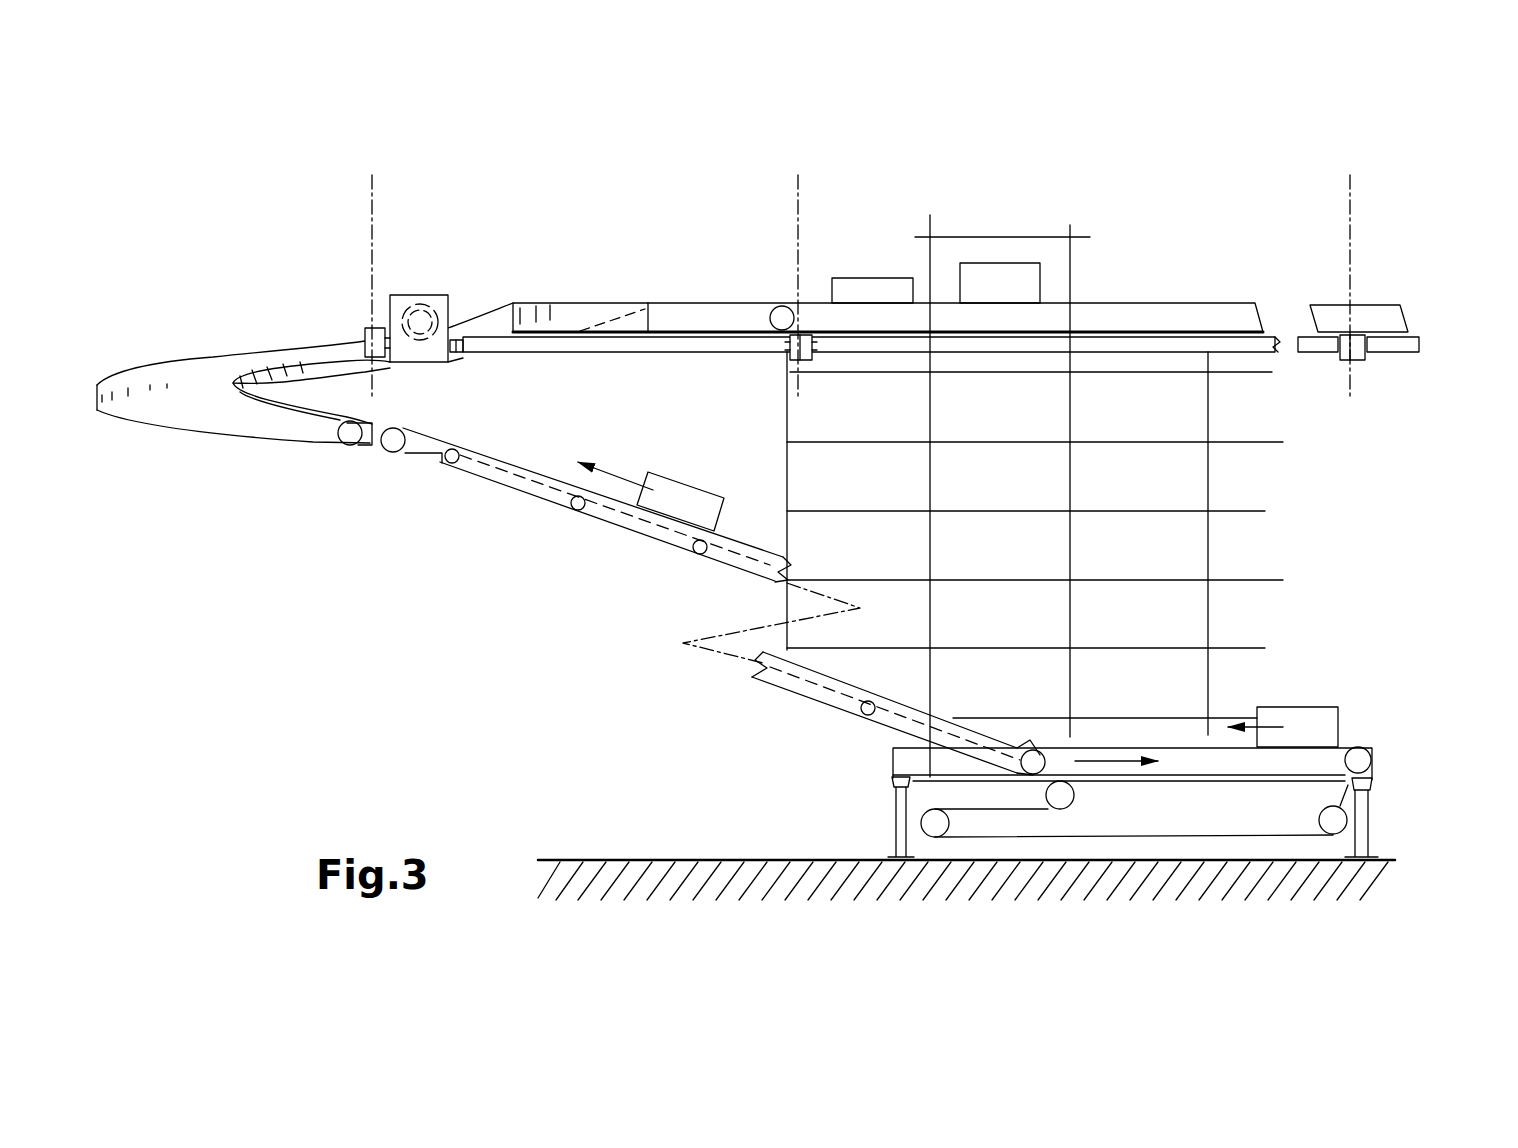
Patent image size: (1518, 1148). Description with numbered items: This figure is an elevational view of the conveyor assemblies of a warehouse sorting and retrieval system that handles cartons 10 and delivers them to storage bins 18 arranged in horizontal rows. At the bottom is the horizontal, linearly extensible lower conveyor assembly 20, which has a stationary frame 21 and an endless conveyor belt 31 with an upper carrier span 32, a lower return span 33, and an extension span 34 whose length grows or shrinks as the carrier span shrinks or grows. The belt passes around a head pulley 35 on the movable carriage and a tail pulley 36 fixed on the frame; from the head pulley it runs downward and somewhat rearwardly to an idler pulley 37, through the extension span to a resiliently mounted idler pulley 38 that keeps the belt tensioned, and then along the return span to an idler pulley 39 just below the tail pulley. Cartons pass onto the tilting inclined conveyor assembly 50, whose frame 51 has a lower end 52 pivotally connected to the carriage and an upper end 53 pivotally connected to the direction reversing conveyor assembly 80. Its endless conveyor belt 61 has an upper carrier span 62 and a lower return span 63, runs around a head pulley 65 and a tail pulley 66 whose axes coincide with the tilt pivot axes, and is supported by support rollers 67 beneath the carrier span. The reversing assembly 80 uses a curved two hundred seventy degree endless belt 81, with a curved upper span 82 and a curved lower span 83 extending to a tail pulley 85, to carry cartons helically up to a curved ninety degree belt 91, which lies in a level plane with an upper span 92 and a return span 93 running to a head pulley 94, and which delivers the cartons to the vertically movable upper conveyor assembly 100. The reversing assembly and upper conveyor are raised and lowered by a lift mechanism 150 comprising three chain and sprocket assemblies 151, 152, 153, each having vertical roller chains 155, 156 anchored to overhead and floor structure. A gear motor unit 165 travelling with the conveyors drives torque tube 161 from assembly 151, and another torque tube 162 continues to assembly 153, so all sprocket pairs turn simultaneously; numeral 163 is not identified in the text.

The cartons 10 is at (985, 297).
The storage bins 18 is at (982, 422).
The lower conveyor assembly 20 is at (1150, 722).
The stationary frame 21 is at (893, 832).
The endless conveyor belt 31 is at (1366, 820).
The carrier span 32 is at (1305, 750).
The return span 33 is at (1165, 836).
The extension span 34 is at (1010, 810).
The head pulley 35 is at (1088, 750).
The tail pulley 36 is at (1365, 748).
The idler pulley 37 is at (1045, 790).
The idler pulley 38 is at (935, 825).
The idler pulley 39 is at (1330, 822).
The inclined conveyor assembly 50 is at (598, 592).
The frame 51 is at (790, 695).
The lower end 52 is at (1012, 748).
The upper end 53 is at (470, 442).
The endless conveyor belt 61 is at (505, 446).
The upper carrier span 62 is at (880, 700).
The lower return span 63 is at (425, 456).
The head pulley 65 is at (395, 448).
The tail pulley 66 is at (1035, 750).
The support rollers 67 is at (588, 515).
The direction reversing conveyor assembly 80 is at (190, 305).
The curved 270° endless belt 81 is at (232, 355).
The curved upper span 82 is at (185, 380).
The curved lower span 83 is at (230, 440).
The tail pulley 85 is at (335, 437).
The curved 90° endless belt 91 is at (723, 298).
The upper span 92 is at (655, 303).
The return span 93 is at (700, 345).
The head pulley 94 is at (778, 306).
The upper conveyor assembly 100 is at (1190, 232).
The lift mechanism 150 is at (412, 190).
The chain and sprocket assembly 151 is at (380, 265).
The chain and sprocket assembly 152 is at (780, 360).
The chain and sprocket assembly 153 is at (1360, 295).
The roller chain 155 is at (375, 395).
The roller chain 156 is at (370, 230).
The torque tube 161 is at (515, 352).
The torque tube 162 is at (1170, 345).
The guide rail pieces 163 is at (1392, 366).
The gear motor unit 165 is at (450, 300).